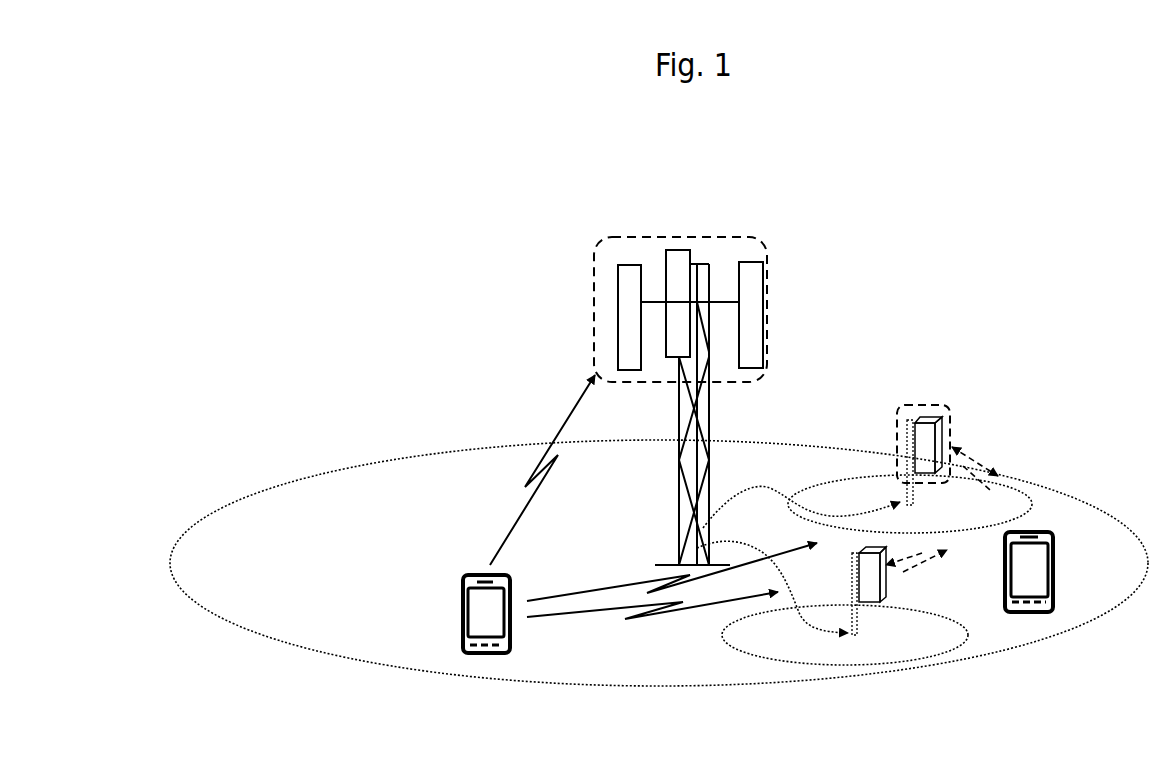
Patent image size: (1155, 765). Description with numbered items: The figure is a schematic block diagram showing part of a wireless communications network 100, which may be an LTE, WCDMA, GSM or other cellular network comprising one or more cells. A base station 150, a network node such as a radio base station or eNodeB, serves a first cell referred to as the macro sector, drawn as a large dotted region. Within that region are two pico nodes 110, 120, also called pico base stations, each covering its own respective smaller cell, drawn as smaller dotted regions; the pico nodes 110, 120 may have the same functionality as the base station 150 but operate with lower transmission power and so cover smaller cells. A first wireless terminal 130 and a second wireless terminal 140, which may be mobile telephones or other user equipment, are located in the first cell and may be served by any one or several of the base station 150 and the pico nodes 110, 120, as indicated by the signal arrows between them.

The wireless communications network 100 is at (659, 459).
The pico node 110 is at (832, 603).
The pico node 120 is at (867, 469).
The first wireless terminal 130 is at (445, 614).
The second wireless terminal 140 is at (1065, 572).
The base station 150 is at (680, 401).